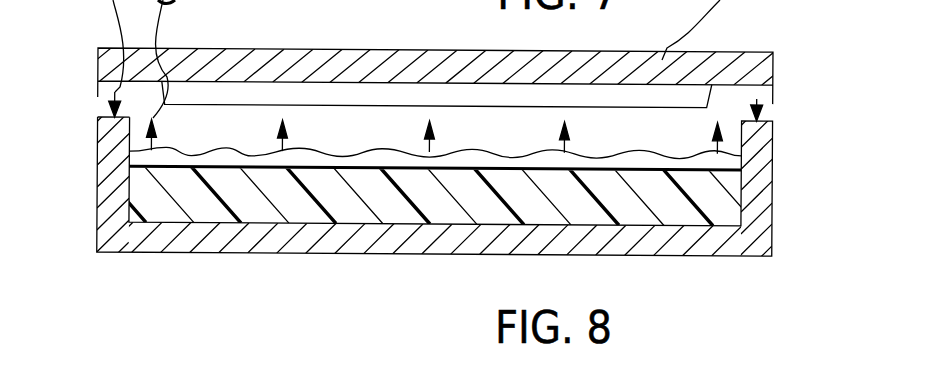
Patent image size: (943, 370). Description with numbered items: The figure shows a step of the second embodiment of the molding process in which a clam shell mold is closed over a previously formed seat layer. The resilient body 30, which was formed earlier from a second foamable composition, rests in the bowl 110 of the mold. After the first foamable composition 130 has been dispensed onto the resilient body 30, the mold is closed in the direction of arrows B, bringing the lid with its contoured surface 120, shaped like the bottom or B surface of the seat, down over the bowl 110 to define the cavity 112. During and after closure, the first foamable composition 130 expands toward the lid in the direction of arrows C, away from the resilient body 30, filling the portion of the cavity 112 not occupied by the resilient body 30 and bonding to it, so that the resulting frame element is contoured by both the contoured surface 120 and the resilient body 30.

The contoured surface 120 is at (722, 114).
The bowl 110 is at (773, 132).
The first foamable composition 130 is at (143, 152).
The resilient body 30 is at (362, 203).
The cavity 112 is at (510, 136).
The arrows C is at (713, 147).
The arrows B is at (772, 98).